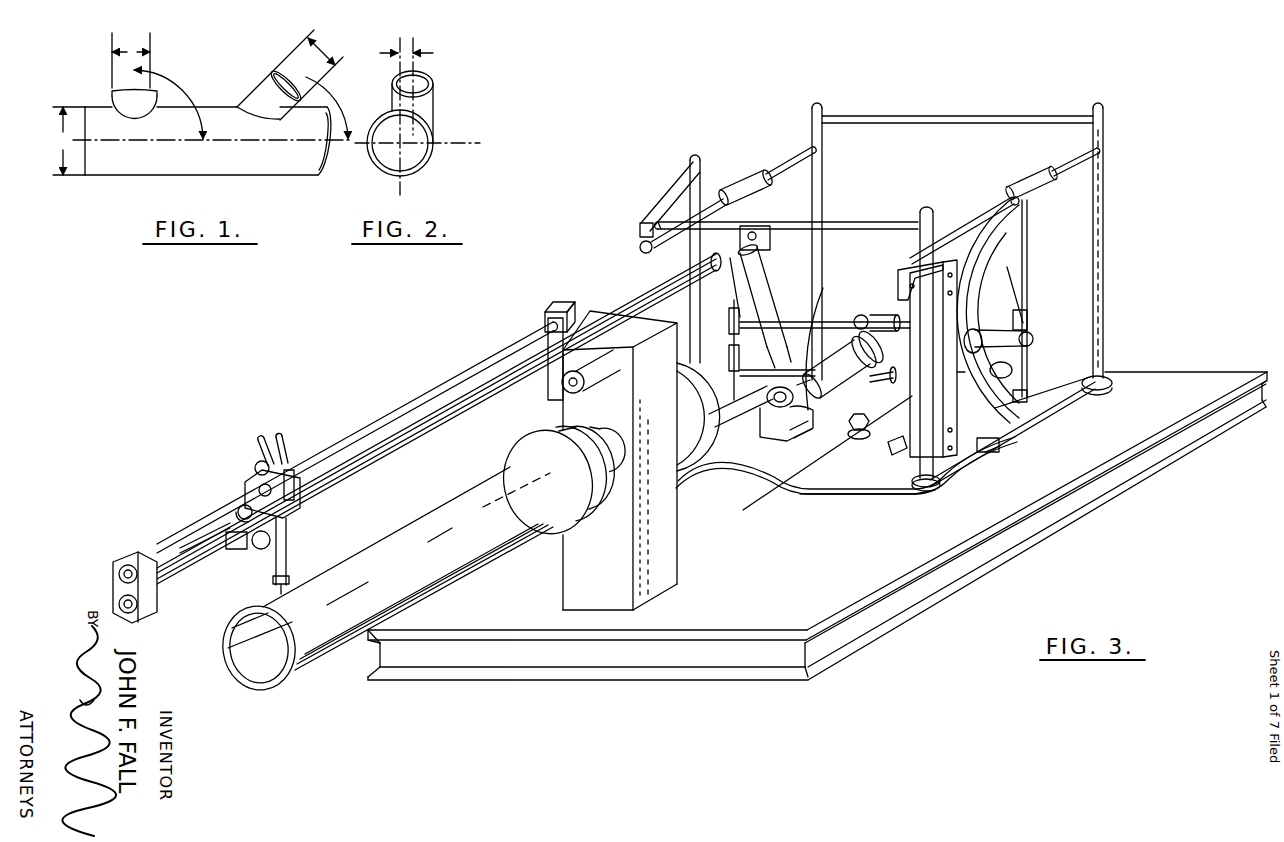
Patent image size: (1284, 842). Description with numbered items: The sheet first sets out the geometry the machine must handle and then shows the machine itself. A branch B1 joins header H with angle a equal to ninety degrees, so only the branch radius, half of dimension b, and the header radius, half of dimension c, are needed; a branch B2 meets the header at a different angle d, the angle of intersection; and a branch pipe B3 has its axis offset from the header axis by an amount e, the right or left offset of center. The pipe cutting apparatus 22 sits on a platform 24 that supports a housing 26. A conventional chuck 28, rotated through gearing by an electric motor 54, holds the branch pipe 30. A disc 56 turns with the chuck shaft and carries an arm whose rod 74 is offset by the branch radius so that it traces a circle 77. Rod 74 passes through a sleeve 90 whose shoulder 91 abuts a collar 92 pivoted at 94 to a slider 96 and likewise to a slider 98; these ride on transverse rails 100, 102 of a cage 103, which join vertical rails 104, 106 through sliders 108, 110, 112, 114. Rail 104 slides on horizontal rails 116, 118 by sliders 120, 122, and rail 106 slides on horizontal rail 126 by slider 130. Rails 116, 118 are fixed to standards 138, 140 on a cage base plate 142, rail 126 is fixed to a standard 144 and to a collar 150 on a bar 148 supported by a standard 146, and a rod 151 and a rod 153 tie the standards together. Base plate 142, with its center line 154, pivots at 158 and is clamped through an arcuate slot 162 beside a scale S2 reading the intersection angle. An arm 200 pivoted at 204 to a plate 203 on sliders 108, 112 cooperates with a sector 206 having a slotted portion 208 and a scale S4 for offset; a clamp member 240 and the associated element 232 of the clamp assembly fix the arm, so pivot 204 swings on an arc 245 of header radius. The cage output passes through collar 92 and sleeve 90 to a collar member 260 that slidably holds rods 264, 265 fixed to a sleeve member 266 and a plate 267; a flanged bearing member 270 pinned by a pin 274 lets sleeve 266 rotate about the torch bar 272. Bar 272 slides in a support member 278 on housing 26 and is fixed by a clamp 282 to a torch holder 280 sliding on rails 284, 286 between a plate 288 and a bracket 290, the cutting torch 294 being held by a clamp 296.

In FIG. 1, the header H is at (216, 166).
In FIG. 2, the header H is at (432, 153).
In FIG. 1, the branch B1 is at (149, 103).
In FIG. 1, the branch B2 is at (262, 87).
In FIG. 2, the branch pipe B3 is at (430, 103).
In FIG. 1, the angle a is at (168, 104).
In FIG. 1, the branch diameter b is at (227, 65).
In FIG. 1, the header diameter c is at (69, 141).
In FIG. 1, the angle d is at (327, 108).
In FIG. 2, the offset e is at (406, 52).
In FIG. 3, the pipe cutting apparatus 22 is at (262, 725).
In FIG. 3, the platform 24 is at (758, 583).
In FIG. 3, the housing 26 is at (643, 425).
In FIG. 3, the chuck 28 is at (523, 446).
In FIG. 3, the branch pipe 30 is at (412, 516).
In FIG. 3, the electric motor 54 is at (594, 390).
In FIG. 3, the disc 56 is at (697, 474).
In FIG. 3, the rod 74 is at (774, 440).
In FIG. 3, the circle 77 is at (826, 288).
In FIG. 3, the sleeve 90 is at (822, 384).
In FIG. 3, the shoulder 91 is at (846, 356).
In FIG. 3, the collar 92 is at (878, 348).
In FIG. 3, the pivotal connection 94 is at (860, 315).
In FIG. 3, the slider 96 is at (883, 314).
In FIG. 3, the slider 98 is at (881, 384).
In FIG. 3, the transverse rail 100 is at (793, 317).
In FIG. 3, the transverse rail 102 is at (978, 385).
In FIG. 3, the cage 103 is at (989, 96).
In FIG. 3, the vertical rail 104 is at (1023, 258).
In FIG. 3, the vertical rail 106 is at (766, 208).
In FIG. 3, the slider 108 is at (1030, 312).
In FIG. 3, the slider 110 is at (728, 314).
In FIG. 3, the slider 112 is at (1013, 368).
In FIG. 3, the slider 114 is at (728, 361).
In FIG. 3, the horizontal rail 116 is at (968, 218).
In FIG. 3, the horizontal rail 118 is at (1080, 403).
In FIG. 3, the slider 120 is at (1036, 178).
In FIG. 3, the slider 122 is at (1036, 428).
In FIG. 3, the horizontal rail 126 is at (773, 160).
In FIG. 3, the slider 130 is at (745, 182).
In FIG. 3, the standard 138 is at (1104, 208).
In FIG. 3, the standard 140 is at (942, 484).
In FIG. 3, the cage base plate 142 is at (873, 496).
In FIG. 3, the standard 144 is at (822, 172).
In FIG. 3, the standard 146 is at (688, 258).
In FIG. 3, the bar 148 is at (668, 194).
In FIG. 3, the collar 150 is at (638, 246).
In FIG. 3, the rod 151 is at (1030, 116).
In FIG. 3, the rod 153 is at (880, 222).
In FIG. 3, the center line 154 is at (812, 497).
In FIG. 3, the pivot 158 is at (856, 444).
In FIG. 3, the arcuate slot 162 is at (897, 440).
In FIG. 3, the arm 200 is at (1028, 280).
In FIG. 3, the plate 203 is at (1034, 346).
In FIG. 3, the pivot 204 is at (1036, 336).
In FIG. 3, the sector 206 is at (984, 454).
In FIG. 3, the slotted portion 208 is at (1010, 196).
In FIG. 3, the plate 232 is at (905, 282).
In FIG. 3, the clamp member 240 is at (985, 444).
In FIG. 3, the arc 245 is at (1028, 244).
In FIG. 3, the collar member 260 is at (805, 408).
In FIG. 3, the rod 264 is at (778, 268).
In FIG. 3, the rod 265 is at (737, 306).
In FIG. 3, the sleeve member 266 is at (727, 200).
In FIG. 3, the plate 267 is at (790, 494).
In FIG. 3, the flanged bearing member 270 is at (764, 230).
In FIG. 3, the torch bar 272 is at (422, 436).
In FIG. 3, the pin 274 is at (680, 284).
In FIG. 3, the support member 278 is at (614, 322).
In FIG. 3, the torch holder 280 is at (256, 478).
In FIG. 3, the clamp 282 is at (240, 510).
In FIG. 3, the rail 284 is at (353, 435).
In FIG. 3, the rail 286 is at (180, 542).
In FIG. 3, the plate 288 is at (110, 578).
In FIG. 3, the bracket 290 is at (548, 308).
In FIG. 3, the cutting torch 294 is at (270, 547).
In FIG. 3, the clamp 296 is at (258, 548).
In FIG. 3, the scale S2 is at (905, 488).
In FIG. 3, the scale S4 is at (912, 254).